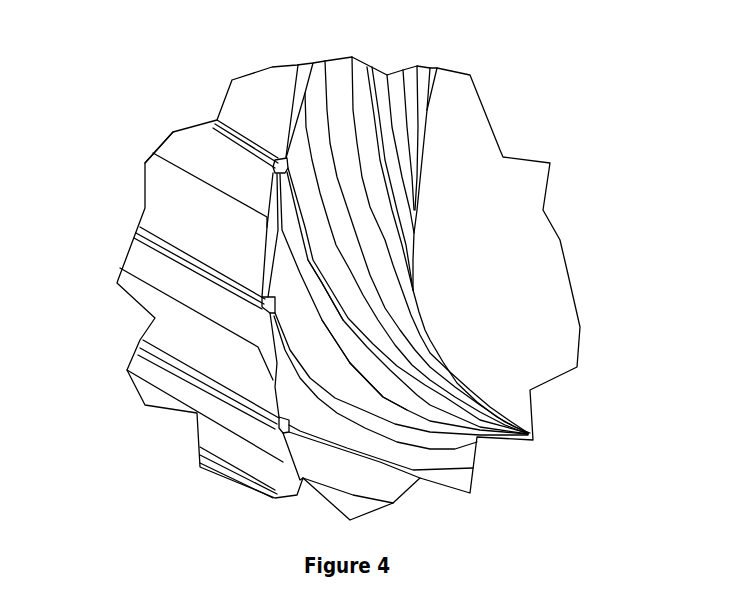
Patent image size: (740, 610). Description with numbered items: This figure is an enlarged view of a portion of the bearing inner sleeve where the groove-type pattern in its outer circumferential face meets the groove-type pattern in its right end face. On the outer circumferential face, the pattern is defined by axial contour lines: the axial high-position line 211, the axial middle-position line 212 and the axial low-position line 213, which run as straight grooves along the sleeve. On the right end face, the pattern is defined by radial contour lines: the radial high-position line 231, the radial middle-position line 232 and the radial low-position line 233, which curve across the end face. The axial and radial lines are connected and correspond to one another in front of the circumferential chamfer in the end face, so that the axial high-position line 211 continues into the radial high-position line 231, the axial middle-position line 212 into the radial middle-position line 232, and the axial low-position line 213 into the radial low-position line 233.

The axial high-position line 211 is at (210, 180).
The axial middle-position line 212 is at (238, 143).
The axial low-position line 213 is at (184, 249).
The radial high-position line 231 is at (335, 345).
The radial middle-position line 232 is at (322, 282).
The radial low-position line 233 is at (379, 402).